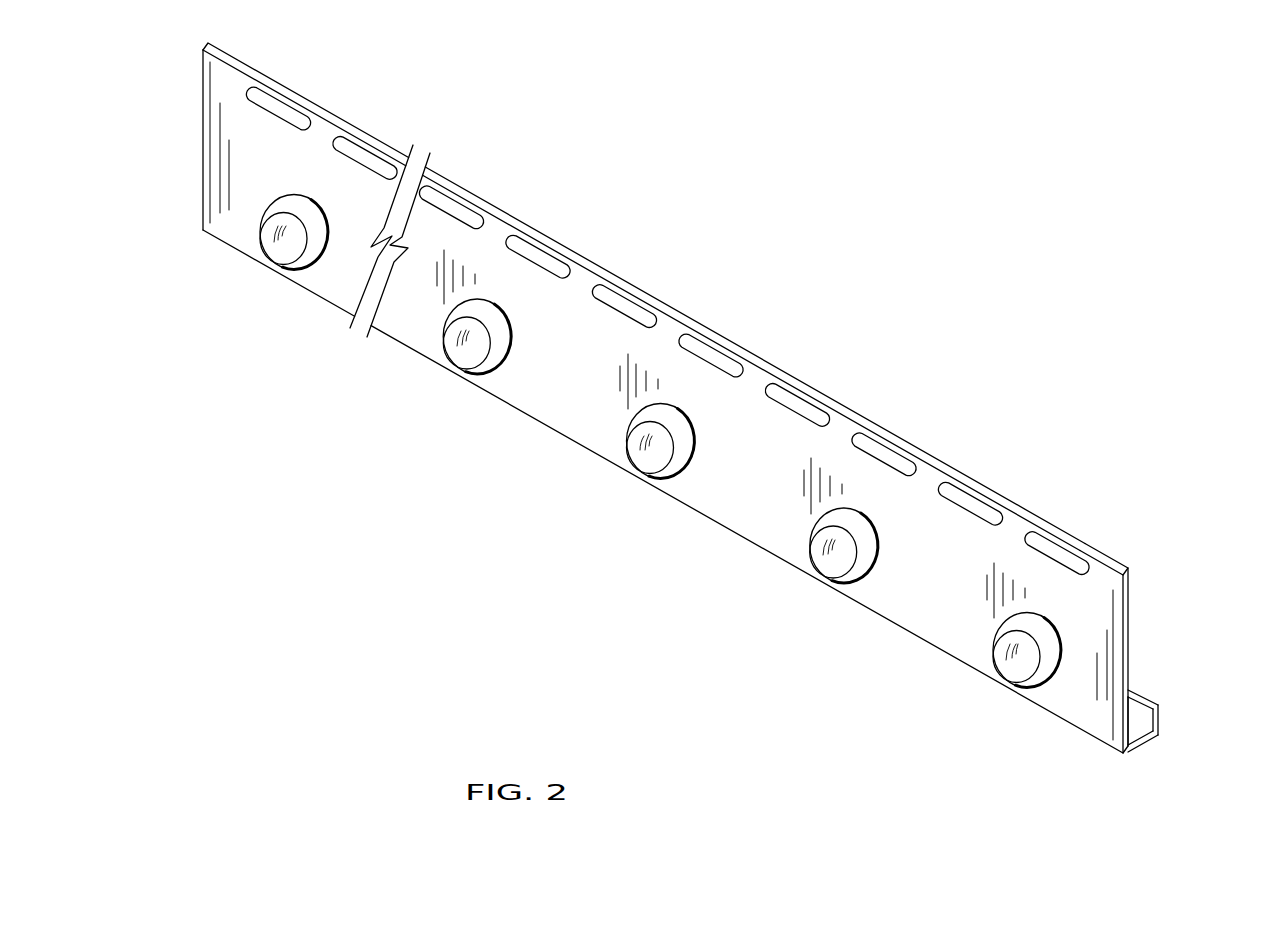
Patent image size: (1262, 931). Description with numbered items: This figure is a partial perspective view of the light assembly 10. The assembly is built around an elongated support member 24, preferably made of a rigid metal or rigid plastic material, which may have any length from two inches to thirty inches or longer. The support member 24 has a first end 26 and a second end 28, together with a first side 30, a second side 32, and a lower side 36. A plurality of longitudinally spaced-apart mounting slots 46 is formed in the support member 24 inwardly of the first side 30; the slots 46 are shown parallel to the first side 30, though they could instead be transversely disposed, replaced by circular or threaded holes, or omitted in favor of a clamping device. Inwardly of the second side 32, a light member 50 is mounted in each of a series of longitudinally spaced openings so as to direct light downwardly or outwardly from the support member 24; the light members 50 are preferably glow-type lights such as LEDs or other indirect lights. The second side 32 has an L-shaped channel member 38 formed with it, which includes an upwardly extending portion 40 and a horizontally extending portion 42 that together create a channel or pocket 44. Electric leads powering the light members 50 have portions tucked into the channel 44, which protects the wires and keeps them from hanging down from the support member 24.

The light assembly 10 is at (922, 427).
The elongated support member 24 is at (1074, 534).
The first end 26 is at (180, 153).
The second end 28 is at (1132, 637).
The first side 30 is at (1105, 556).
The second side 32 is at (1122, 745).
The lower side 36 is at (925, 543).
The L-shaped channel member 38 is at (1167, 722).
The upwardly extending portion 40 is at (1157, 733).
The horizontally extending portion 42 is at (1158, 703).
The channel 44 is at (1142, 721).
The mounting slots 46 is at (1043, 545).
The light member 50 is at (273, 268).